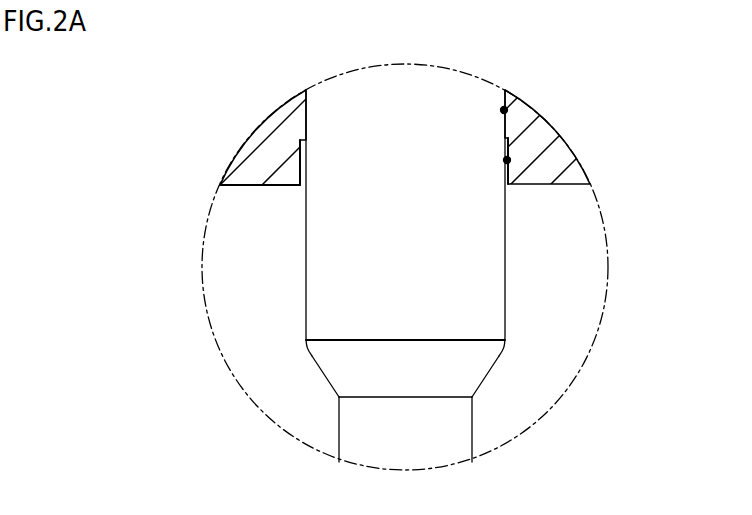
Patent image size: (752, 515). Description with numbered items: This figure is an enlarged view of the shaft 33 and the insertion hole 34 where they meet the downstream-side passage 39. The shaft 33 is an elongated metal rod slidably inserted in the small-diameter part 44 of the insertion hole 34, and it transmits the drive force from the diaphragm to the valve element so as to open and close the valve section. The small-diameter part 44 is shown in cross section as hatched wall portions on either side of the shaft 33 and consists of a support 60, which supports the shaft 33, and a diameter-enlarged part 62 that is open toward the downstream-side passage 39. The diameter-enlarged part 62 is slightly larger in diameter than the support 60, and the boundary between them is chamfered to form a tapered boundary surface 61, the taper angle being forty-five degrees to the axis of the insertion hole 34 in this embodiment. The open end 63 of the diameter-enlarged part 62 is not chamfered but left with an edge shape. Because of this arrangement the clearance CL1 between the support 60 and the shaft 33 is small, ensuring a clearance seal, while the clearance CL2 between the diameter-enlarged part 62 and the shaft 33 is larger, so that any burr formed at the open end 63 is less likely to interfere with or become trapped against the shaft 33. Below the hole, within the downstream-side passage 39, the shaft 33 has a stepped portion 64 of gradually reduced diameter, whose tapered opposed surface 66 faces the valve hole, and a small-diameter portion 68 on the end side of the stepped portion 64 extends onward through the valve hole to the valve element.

The shaft 33 is at (507, 230).
The insertion hole 34 is at (185, 150).
The downstream-side passage 39 is at (255, 292).
The small-diameter part 44 is at (141, 98).
The support 60 is at (303, 107).
The tapered boundary surface 61 is at (510, 148).
The diameter-enlarged part 62 is at (300, 141).
The open end 63 is at (300, 186).
The stepped portion 64 is at (484, 392).
The tapered opposed surface 66 is at (488, 368).
The small-diameter portion 68 is at (474, 428).
The clearance CL1 is at (507, 110).
The clearance CL2 is at (510, 160).